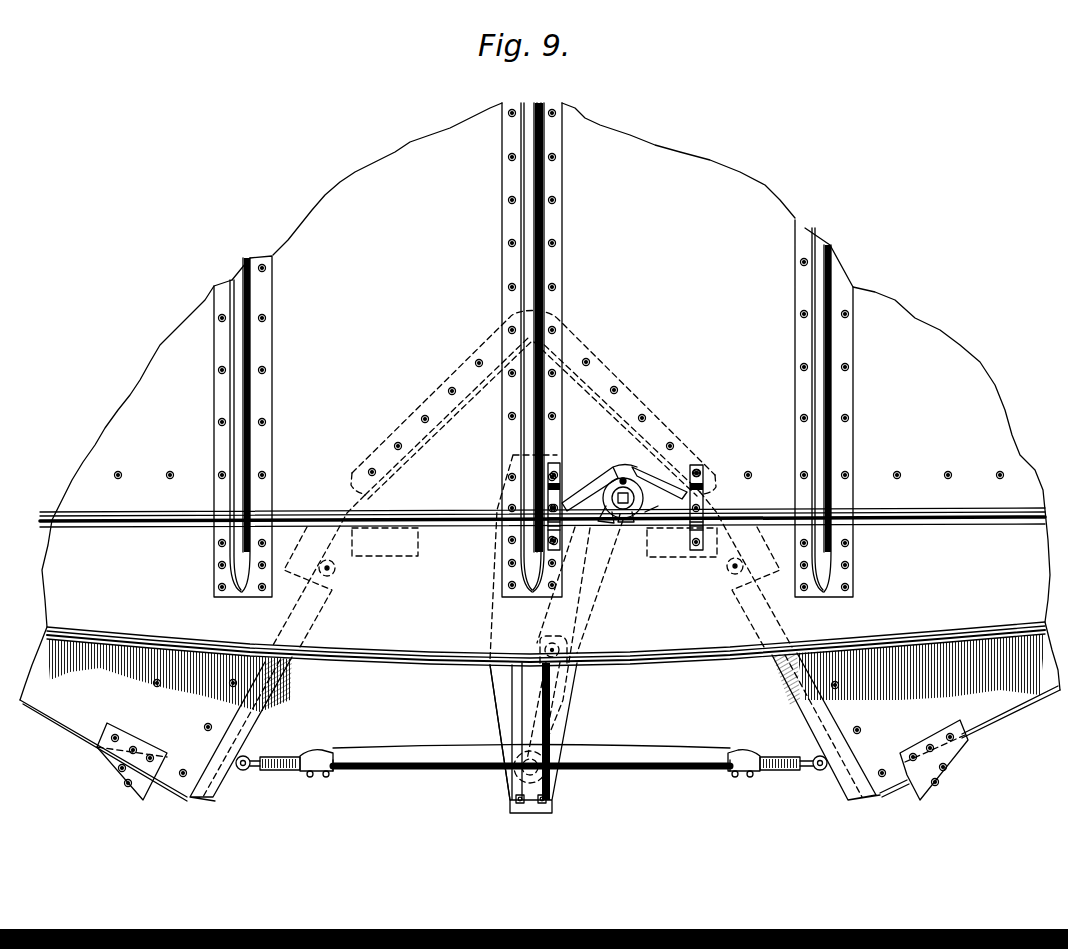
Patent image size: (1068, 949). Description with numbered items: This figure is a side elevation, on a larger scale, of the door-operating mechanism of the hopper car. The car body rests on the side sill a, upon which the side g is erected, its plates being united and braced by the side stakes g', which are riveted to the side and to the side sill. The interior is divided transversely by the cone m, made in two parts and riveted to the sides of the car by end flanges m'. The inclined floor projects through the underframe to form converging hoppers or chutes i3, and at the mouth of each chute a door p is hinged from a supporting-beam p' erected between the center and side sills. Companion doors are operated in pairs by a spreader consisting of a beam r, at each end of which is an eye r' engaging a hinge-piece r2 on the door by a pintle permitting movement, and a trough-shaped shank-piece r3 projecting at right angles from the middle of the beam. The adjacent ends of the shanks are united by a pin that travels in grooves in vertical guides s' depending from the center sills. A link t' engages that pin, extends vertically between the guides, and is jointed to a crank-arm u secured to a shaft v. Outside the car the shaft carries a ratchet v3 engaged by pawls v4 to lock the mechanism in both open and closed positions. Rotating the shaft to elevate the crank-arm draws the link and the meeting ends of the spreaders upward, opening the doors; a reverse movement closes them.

The side sill a is at (540, 401).
The side g is at (596, 350).
The side stake g' is at (557, 408).
The transverse cone m is at (532, 492).
The end flange m' is at (533, 402).
The shaft v is at (613, 517).
The ratchet v3 is at (661, 500).
The pawl v4 is at (647, 458).
The door p is at (535, 664).
The supporting-beam p' is at (534, 527).
The crank-arm u is at (600, 588).
The vertical guide s' is at (507, 627).
The link t' is at (559, 709).
The hopper, pocket, or chute i3 is at (540, 717).
The beam r is at (530, 744).
The eye r' is at (531, 740).
The hinge-piece r2 is at (824, 773).
The shank-piece r3 is at (400, 752).